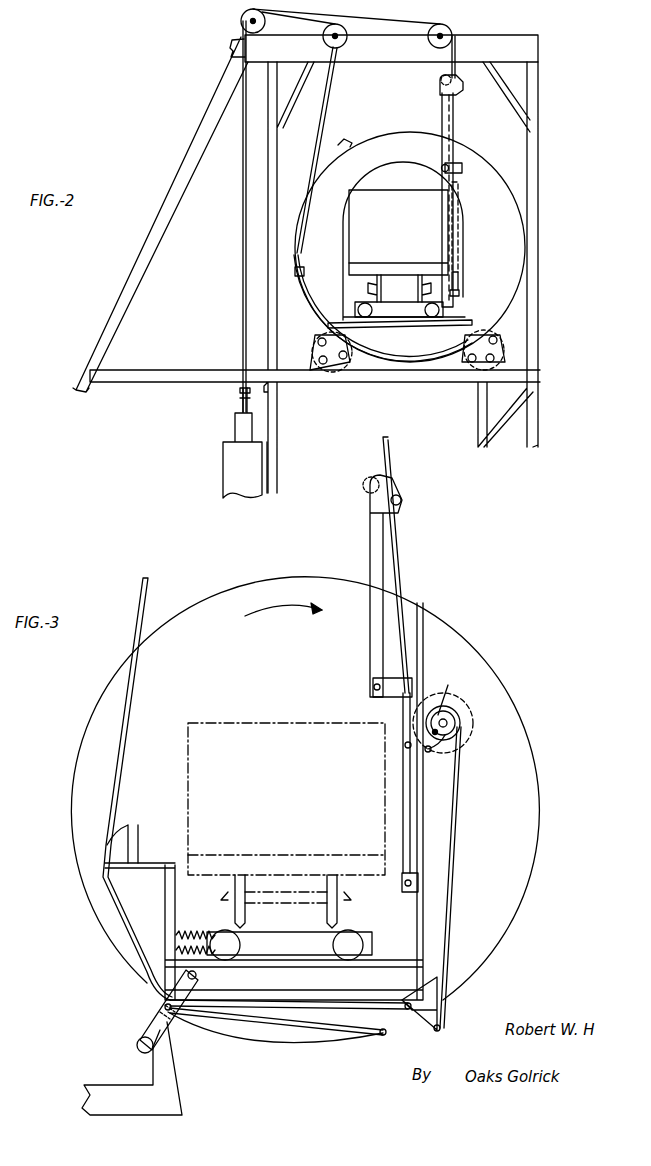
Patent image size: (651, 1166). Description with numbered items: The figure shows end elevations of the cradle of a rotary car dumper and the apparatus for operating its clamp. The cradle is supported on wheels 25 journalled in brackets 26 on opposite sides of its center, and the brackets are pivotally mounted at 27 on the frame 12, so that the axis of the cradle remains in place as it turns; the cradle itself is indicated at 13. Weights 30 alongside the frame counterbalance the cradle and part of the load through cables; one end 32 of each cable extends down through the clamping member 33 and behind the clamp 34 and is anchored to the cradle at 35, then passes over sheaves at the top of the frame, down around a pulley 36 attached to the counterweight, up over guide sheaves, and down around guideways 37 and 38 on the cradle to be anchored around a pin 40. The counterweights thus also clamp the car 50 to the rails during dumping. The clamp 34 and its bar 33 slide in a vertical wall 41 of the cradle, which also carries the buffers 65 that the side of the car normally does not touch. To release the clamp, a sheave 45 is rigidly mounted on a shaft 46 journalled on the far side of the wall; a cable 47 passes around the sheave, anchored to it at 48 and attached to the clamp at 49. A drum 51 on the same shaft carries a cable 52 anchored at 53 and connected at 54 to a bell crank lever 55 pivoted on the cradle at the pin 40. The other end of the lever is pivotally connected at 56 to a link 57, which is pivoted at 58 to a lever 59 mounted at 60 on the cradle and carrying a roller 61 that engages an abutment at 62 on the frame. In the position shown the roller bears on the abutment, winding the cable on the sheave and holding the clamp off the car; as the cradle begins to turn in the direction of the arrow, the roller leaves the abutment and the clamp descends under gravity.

In FIG. 2, the frame 12 is at (409, 376).
In FIG. 2, the drum 13 is at (527, 300).
In FIG. 3, the drum 13 is at (535, 748).
In FIG. 2, the wheels 25 is at (318, 340).
In FIG. 2, the brackets 26 is at (498, 356).
In FIG. 2, the pivot 27 is at (487, 362).
In FIG. 2, the weights 30 is at (232, 470).
In FIG. 2, the cable end 32 is at (335, 95).
In FIG. 3, the cable end 32 is at (132, 684).
In FIG. 2, the clamping member 33 is at (445, 120).
In FIG. 3, the clamping member 33 is at (386, 565).
In FIG. 2, the clamp 34 is at (463, 168).
In FIG. 3, the clamp 34 is at (377, 697).
In FIG. 3, the anchor 35 is at (402, 884).
In FIG. 2, the pulley 36 is at (240, 391).
In FIG. 2, the guideway 37 is at (304, 275).
In FIG. 3, the guideway 37 is at (112, 843).
In FIG. 2, the guideway 38 is at (318, 322).
In FIG. 3, the guideway 38 is at (147, 982).
In FIG. 3, the pin 40 is at (418, 1015).
In FIG. 3, the vertical wall 41 is at (420, 630).
In FIG. 3, the sheave 45 is at (473, 721).
In FIG. 3, the shaft 46 is at (450, 727).
In FIG. 3, the cable 47 is at (470, 702).
In FIG. 3, the anchor point 48 is at (436, 750).
In FIG. 3, the attachment point 49 is at (405, 746).
In FIG. 2, the car 50 is at (398, 253).
In FIG. 3, the car 50 is at (168, 741).
In FIG. 3, the drum 51 is at (433, 751).
In FIG. 3, the cable 52 is at (452, 879).
In FIG. 3, the anchor point 53 is at (441, 691).
In FIG. 3, the connection 54 is at (442, 1027).
In FIG. 3, the bell crank lever 55 is at (380, 1012).
In FIG. 3, the pivotal connection 56 is at (382, 1036).
In FIG. 3, the link 57 is at (275, 1035).
In FIG. 3, the pivot 58 is at (163, 1007).
In FIG. 3, the lever 59 is at (172, 1020).
In FIG. 3, the pivot 60 is at (198, 976).
In FIG. 3, the roller 61 is at (138, 1047).
In FIG. 3, the abutment 62 is at (150, 1068).
In FIG. 2, the buffers 65 is at (456, 238).